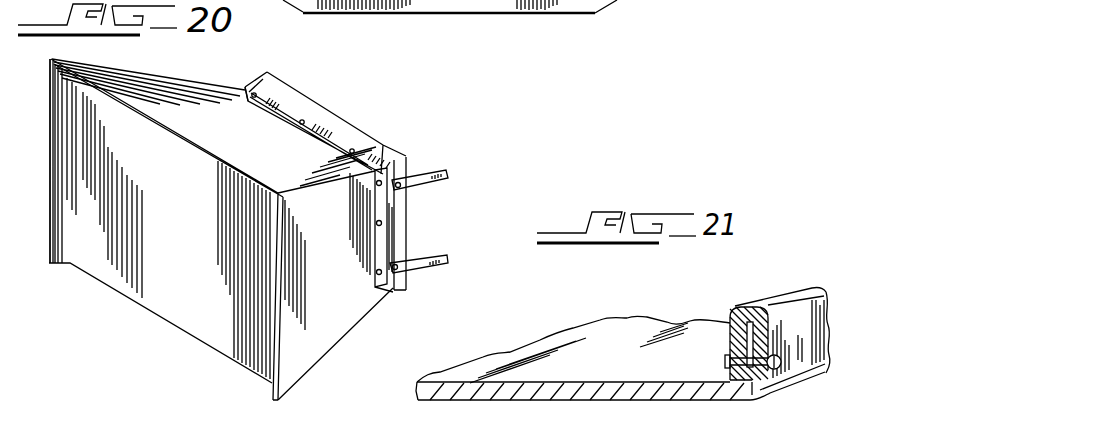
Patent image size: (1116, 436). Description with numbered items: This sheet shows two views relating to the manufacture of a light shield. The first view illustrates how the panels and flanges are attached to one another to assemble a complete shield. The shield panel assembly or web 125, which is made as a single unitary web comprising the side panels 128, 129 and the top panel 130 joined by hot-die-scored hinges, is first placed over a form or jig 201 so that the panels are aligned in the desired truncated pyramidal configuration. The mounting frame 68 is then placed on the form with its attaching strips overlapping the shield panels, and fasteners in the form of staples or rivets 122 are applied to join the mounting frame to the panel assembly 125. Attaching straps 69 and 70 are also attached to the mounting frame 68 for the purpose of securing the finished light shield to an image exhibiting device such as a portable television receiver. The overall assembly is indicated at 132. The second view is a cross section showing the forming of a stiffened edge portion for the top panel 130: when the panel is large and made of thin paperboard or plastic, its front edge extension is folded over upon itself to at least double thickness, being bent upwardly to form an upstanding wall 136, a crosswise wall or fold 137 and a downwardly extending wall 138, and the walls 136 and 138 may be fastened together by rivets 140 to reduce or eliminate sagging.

In FIG. 20, the mounting frame 68 is at (358, 134).
In FIG. 20, the attaching strap 69 is at (448, 176).
In FIG. 20, the attaching strap 70 is at (448, 262).
In FIG. 20, the staples or rivets 122 is at (383, 223).
In FIG. 20, the panel assembly 125 is at (338, 341).
In FIG. 20, the side panel 128 is at (62, 165).
In FIG. 20, the side panel 129 is at (350, 251).
In FIG. 20, the top panel 130 is at (268, 146).
In FIG. 21, the top panel 130 is at (642, 388).
In FIG. 20, the holder assembly 132 is at (219, 77).
In FIG. 21, the upstanding wall 136 is at (797, 373).
In FIG. 21, the crosswise wall or fold 137 is at (788, 297).
In FIG. 21, the downwardly extending wall 138 is at (737, 343).
In FIG. 21, the rivets 140 is at (781, 358).
In FIG. 20, the form or jig 201 is at (227, 336).